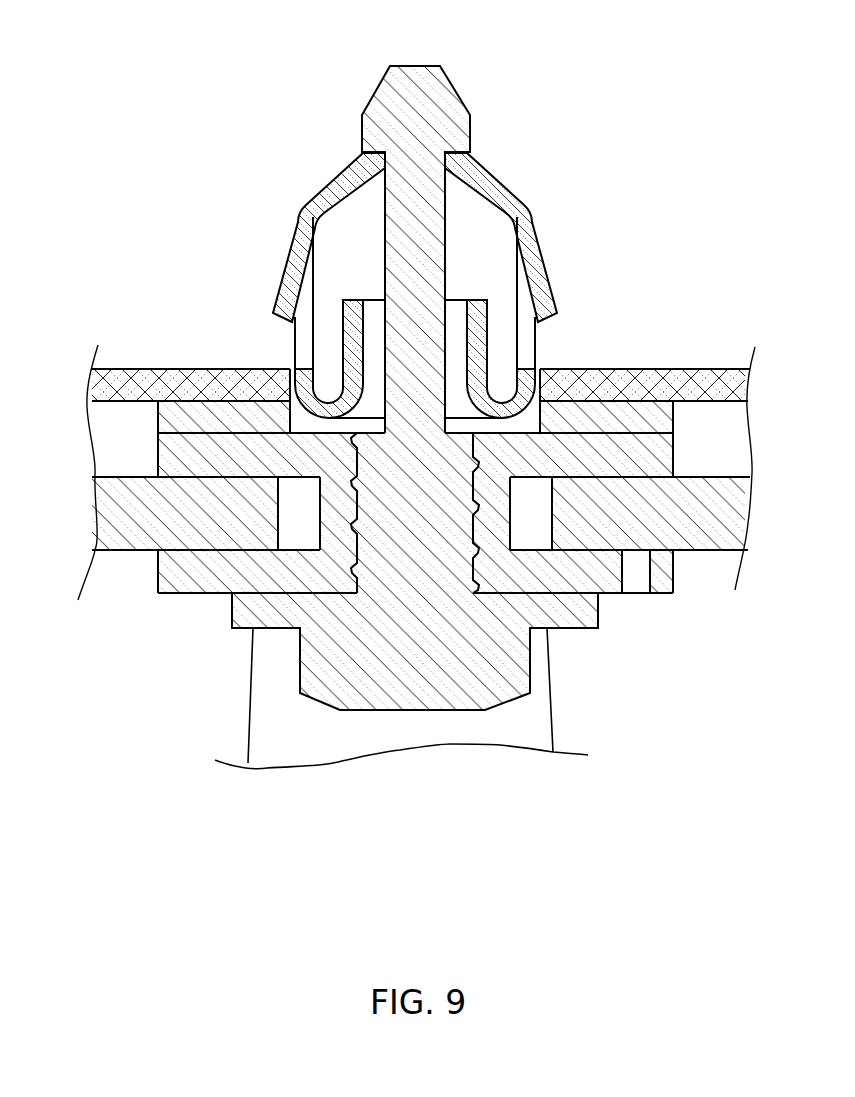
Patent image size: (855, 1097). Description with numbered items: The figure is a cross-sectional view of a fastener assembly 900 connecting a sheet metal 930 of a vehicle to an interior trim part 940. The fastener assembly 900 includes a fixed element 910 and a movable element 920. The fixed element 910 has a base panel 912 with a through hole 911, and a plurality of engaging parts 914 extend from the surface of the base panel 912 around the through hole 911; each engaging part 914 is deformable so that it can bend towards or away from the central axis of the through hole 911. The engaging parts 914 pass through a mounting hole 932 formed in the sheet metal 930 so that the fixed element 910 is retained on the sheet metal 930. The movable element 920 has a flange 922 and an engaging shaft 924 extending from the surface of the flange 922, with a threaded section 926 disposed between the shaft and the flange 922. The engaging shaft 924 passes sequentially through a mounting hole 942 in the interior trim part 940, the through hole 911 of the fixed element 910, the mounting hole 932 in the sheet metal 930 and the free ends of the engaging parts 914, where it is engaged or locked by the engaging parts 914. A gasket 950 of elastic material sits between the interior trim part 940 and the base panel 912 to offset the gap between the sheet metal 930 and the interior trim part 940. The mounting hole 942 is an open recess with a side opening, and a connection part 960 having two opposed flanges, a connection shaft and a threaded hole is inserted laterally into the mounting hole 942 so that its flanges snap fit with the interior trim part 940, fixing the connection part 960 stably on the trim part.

The fastener assembly 900 is at (662, 38).
The fixed element 910 is at (540, 345).
The through hole 911 is at (462, 322).
The base panel 912 is at (313, 408).
The engaging part 914 is at (298, 223).
The movable element 920 is at (342, 710).
The flange 922 is at (600, 608).
The engaging shaft 924 is at (472, 137).
The threaded section 926 is at (423, 542).
The sheet metal 930 is at (740, 383).
The mounting hole 932 is at (295, 368).
The interior trim part 940 is at (738, 515).
The mounting hole 942 is at (290, 523).
The gasket 950 is at (667, 418).
The connection part 960 is at (165, 567).